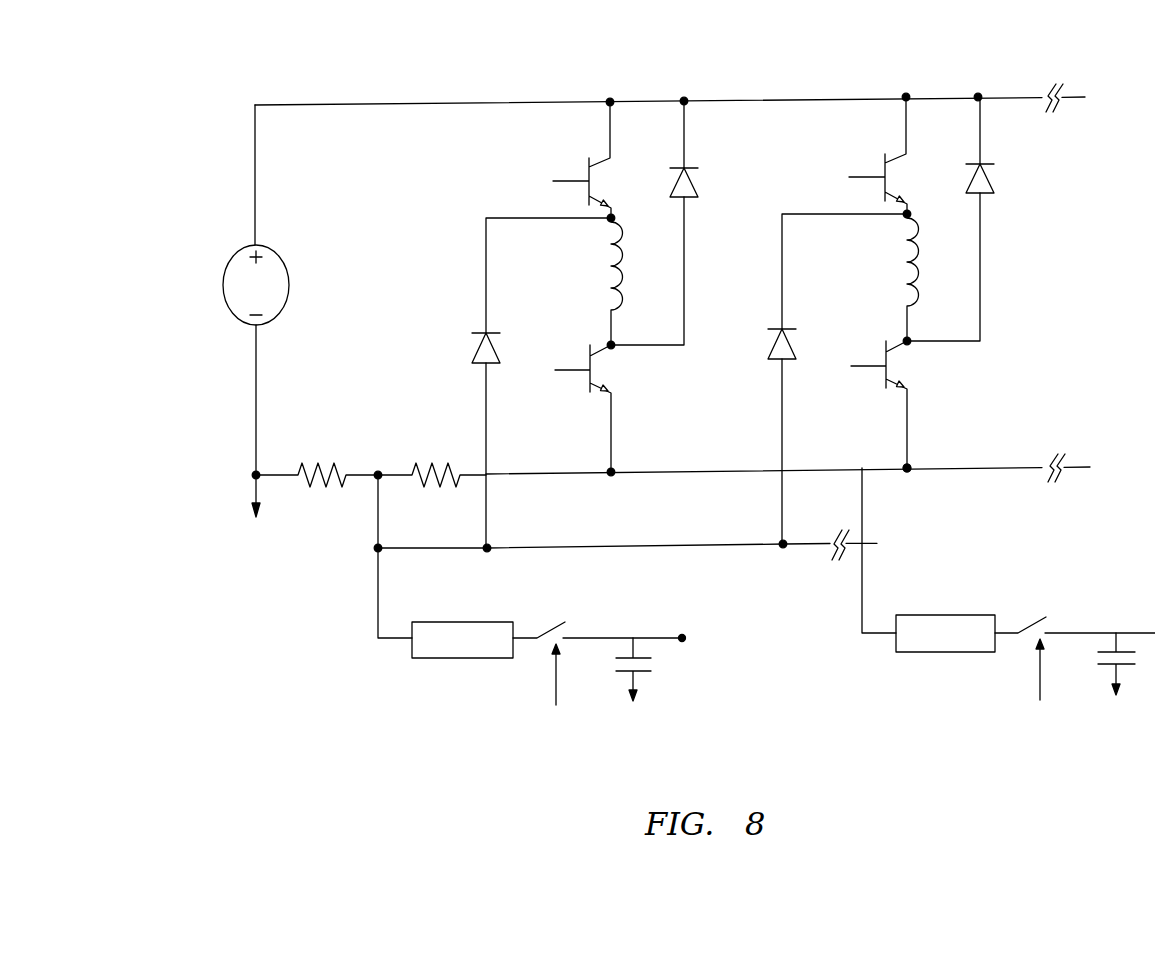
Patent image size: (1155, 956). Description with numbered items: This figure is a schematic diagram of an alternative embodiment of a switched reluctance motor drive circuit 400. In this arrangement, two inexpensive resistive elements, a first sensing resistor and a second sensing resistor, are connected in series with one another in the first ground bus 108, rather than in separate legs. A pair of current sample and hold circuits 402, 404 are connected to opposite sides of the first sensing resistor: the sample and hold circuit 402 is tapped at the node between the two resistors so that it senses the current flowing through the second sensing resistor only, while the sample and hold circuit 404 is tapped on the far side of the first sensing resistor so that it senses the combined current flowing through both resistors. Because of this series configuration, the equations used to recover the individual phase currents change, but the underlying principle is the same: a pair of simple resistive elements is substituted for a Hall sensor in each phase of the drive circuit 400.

The SRM drive circuit 400 is at (383, 61).
The current sample and hold circuit 402 is at (456, 702).
The current sample and hold circuit 404 is at (982, 588).
The first ground bus 108 is at (1012, 465).